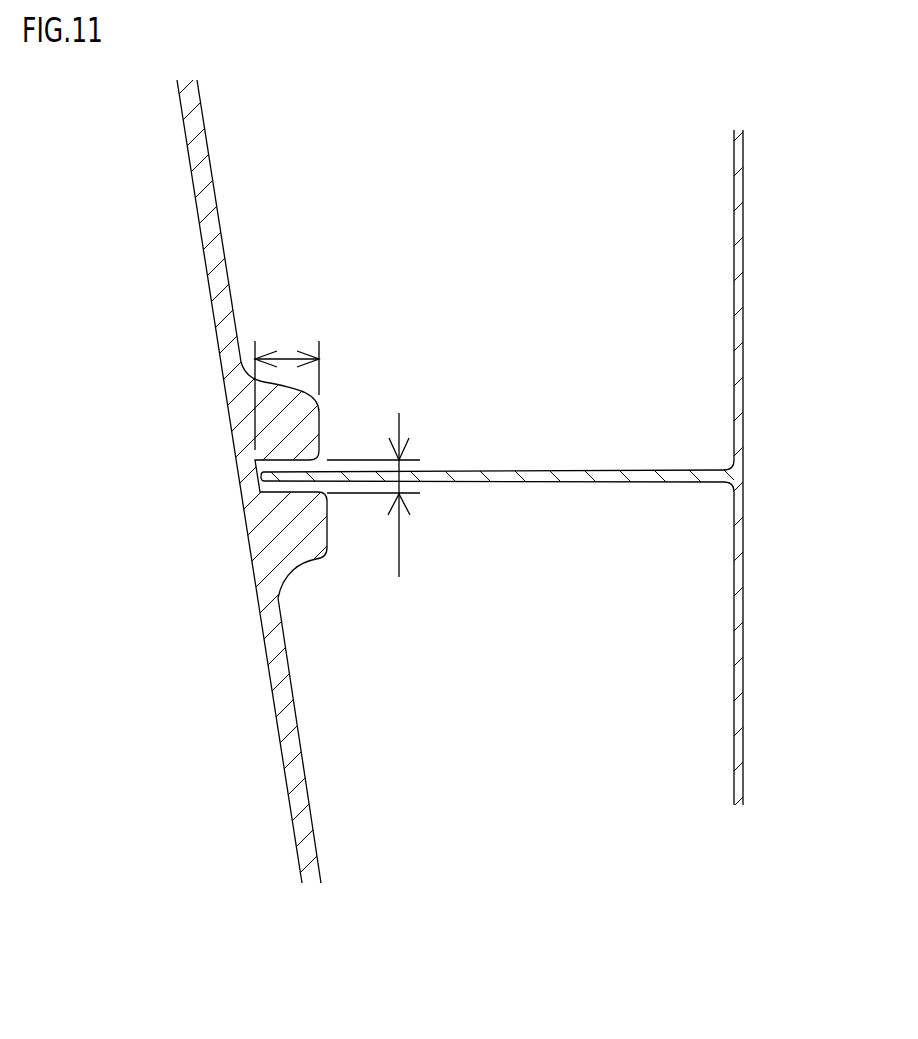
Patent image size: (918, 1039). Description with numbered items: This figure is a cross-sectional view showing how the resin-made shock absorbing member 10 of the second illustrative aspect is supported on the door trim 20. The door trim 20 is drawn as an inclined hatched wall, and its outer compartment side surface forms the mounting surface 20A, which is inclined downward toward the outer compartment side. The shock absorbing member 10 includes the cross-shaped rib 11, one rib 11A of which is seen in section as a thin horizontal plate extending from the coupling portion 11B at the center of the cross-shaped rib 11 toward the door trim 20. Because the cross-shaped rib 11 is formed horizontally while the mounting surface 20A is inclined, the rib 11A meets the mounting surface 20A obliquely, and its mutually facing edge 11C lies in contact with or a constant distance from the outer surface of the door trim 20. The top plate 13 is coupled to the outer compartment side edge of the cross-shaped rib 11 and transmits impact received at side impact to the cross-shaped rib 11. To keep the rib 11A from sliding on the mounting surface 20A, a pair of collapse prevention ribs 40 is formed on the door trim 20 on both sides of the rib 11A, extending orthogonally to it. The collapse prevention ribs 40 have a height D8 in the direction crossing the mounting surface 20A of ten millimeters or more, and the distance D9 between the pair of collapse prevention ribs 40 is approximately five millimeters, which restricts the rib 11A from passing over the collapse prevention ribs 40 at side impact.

The resin-made shock absorbing member 10 is at (745, 288).
The cross-shaped rib 11 is at (653, 468).
The rib 11A is at (515, 471).
The coupling portion 11B is at (729, 474).
The mutually facing edge 11C is at (266, 477).
The top plate 13 is at (738, 638).
The door trim 20 is at (203, 109).
The mounting surface 20A is at (299, 733).
The collapse prevention rib 40 is at (305, 423).
The height of collapse prevention rib D8 is at (287, 386).
The distance between collapse prevention ribs D9 is at (384, 495).